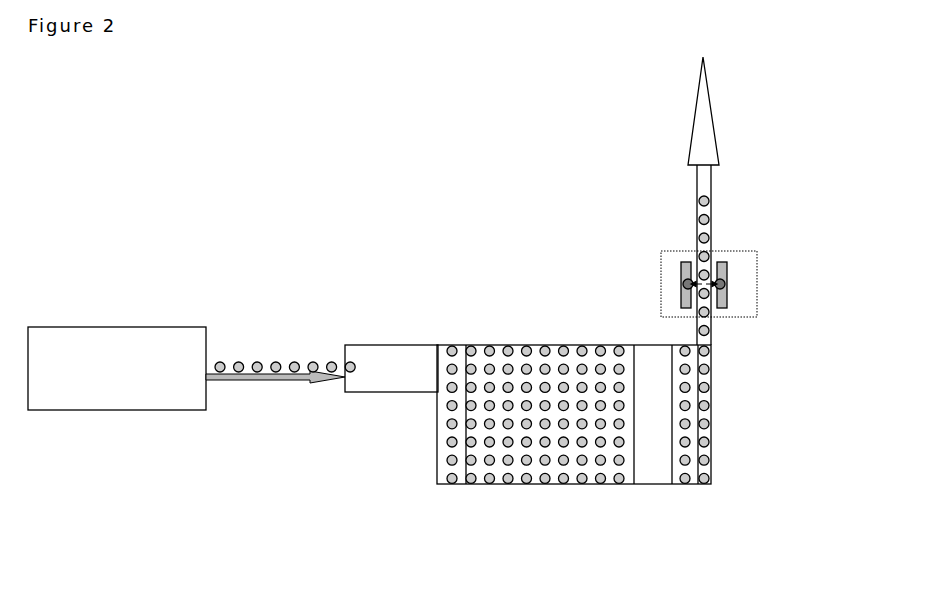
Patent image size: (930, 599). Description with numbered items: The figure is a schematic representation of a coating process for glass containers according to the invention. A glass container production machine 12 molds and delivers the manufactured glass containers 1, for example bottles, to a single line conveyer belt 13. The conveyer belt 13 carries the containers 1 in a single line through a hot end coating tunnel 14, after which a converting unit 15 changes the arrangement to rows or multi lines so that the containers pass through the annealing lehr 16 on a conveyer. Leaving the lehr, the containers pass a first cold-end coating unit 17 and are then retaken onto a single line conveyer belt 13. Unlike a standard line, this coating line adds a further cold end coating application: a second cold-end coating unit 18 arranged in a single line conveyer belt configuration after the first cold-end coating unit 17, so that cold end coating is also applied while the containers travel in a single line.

The glass containers 1 is at (238, 360).
The glass container production machine 12 is at (118, 413).
The single line conveyer belt 13 is at (682, 234).
The hot end coating tunnel 14 is at (387, 395).
The converting unit in rows or multi lines 15 is at (442, 443).
The annealing lehr 16 is at (499, 490).
The cold-end coating unit 17 is at (648, 490).
The second cold-end coating unit 18 is at (762, 280).